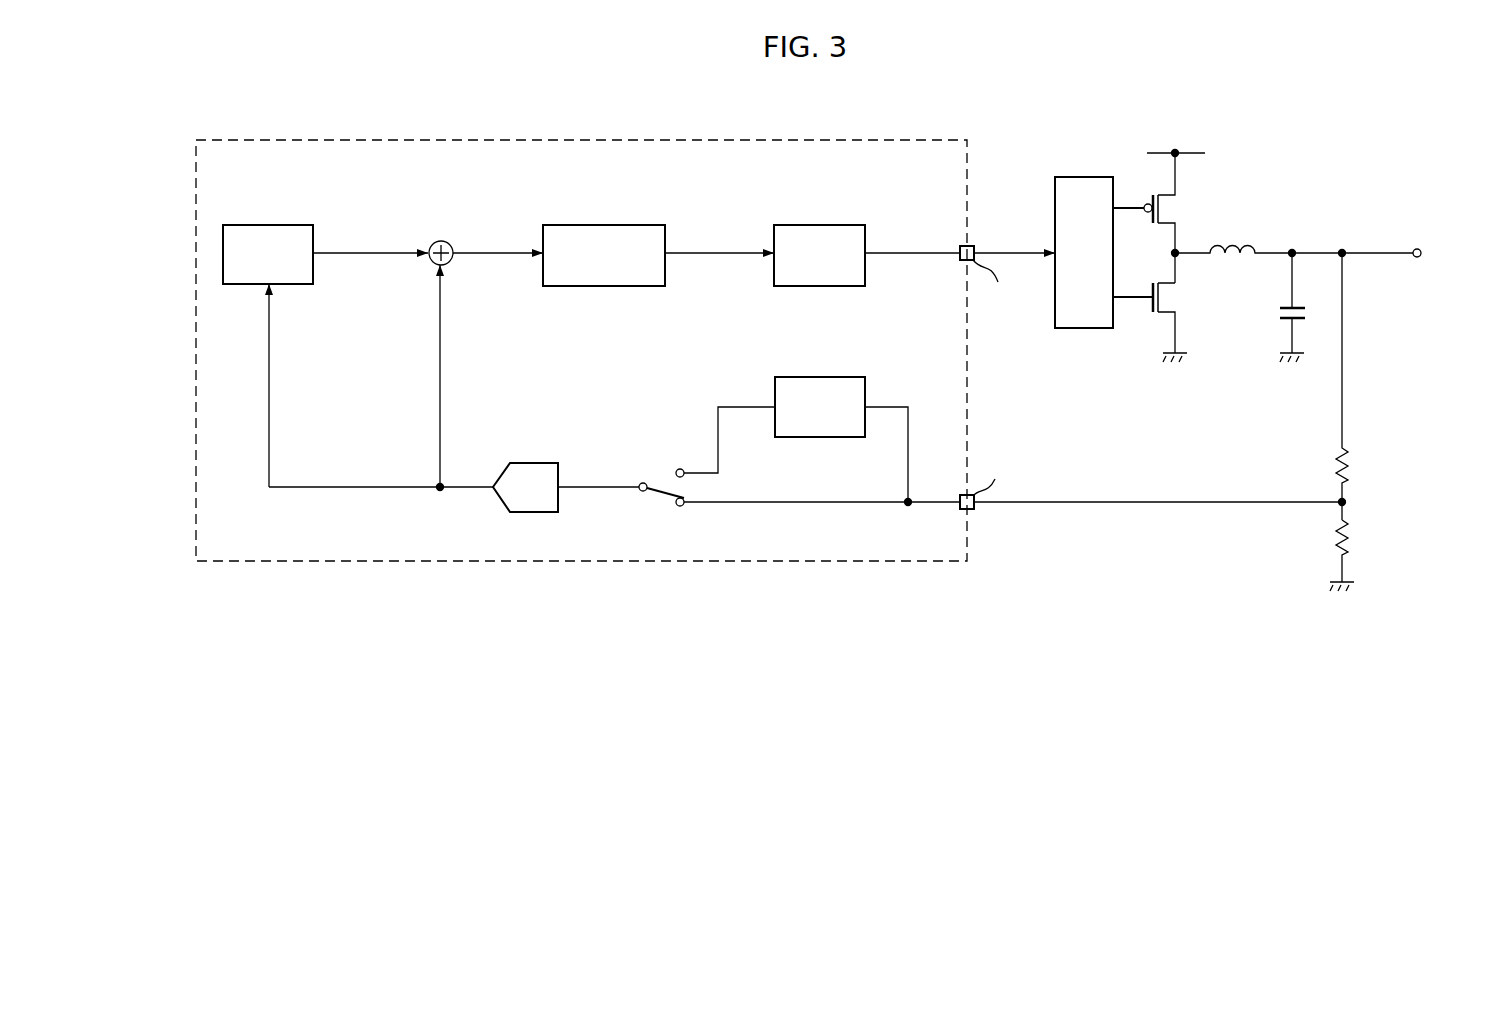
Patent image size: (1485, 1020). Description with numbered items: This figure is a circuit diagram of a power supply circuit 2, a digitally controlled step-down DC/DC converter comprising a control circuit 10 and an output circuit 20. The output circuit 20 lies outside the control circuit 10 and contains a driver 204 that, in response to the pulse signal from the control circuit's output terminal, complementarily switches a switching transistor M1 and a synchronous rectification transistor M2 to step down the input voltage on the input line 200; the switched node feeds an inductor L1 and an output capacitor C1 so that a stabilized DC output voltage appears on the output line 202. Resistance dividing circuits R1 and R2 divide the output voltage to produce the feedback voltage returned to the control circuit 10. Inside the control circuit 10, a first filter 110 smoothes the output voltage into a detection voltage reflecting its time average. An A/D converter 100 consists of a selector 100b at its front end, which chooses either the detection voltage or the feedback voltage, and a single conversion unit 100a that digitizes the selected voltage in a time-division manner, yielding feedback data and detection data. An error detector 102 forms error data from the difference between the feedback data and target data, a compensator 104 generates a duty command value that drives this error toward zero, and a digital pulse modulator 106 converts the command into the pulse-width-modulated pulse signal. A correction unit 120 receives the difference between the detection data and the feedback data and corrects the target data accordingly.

The power supply circuit 2 is at (826, 693).
The control circuit 10 is at (710, 140).
The output circuit 20 is at (1206, 444).
The A/D converter 100 is at (682, 402).
The conversion unit 100a is at (546, 463).
The selector 100b is at (656, 468).
The error detector 102 is at (446, 241).
The compensator 104 is at (588, 225).
The digital pulse modulator 106 is at (815, 225).
The first filter 110 is at (815, 377).
The correction unit 120 is at (270, 225).
The input line 200 is at (1200, 152).
The output line 202 is at (1318, 252).
The driver 204 is at (1082, 328).
The switching transistor M1 is at (1180, 212).
The synchronous rectification transistor M2 is at (1180, 300).
The inductor L1 is at (1238, 236).
The output capacitor C1 is at (1270, 304).
The resistance dividing circuit R1 is at (1352, 469).
The resistance dividing circuit R2 is at (1364, 555).